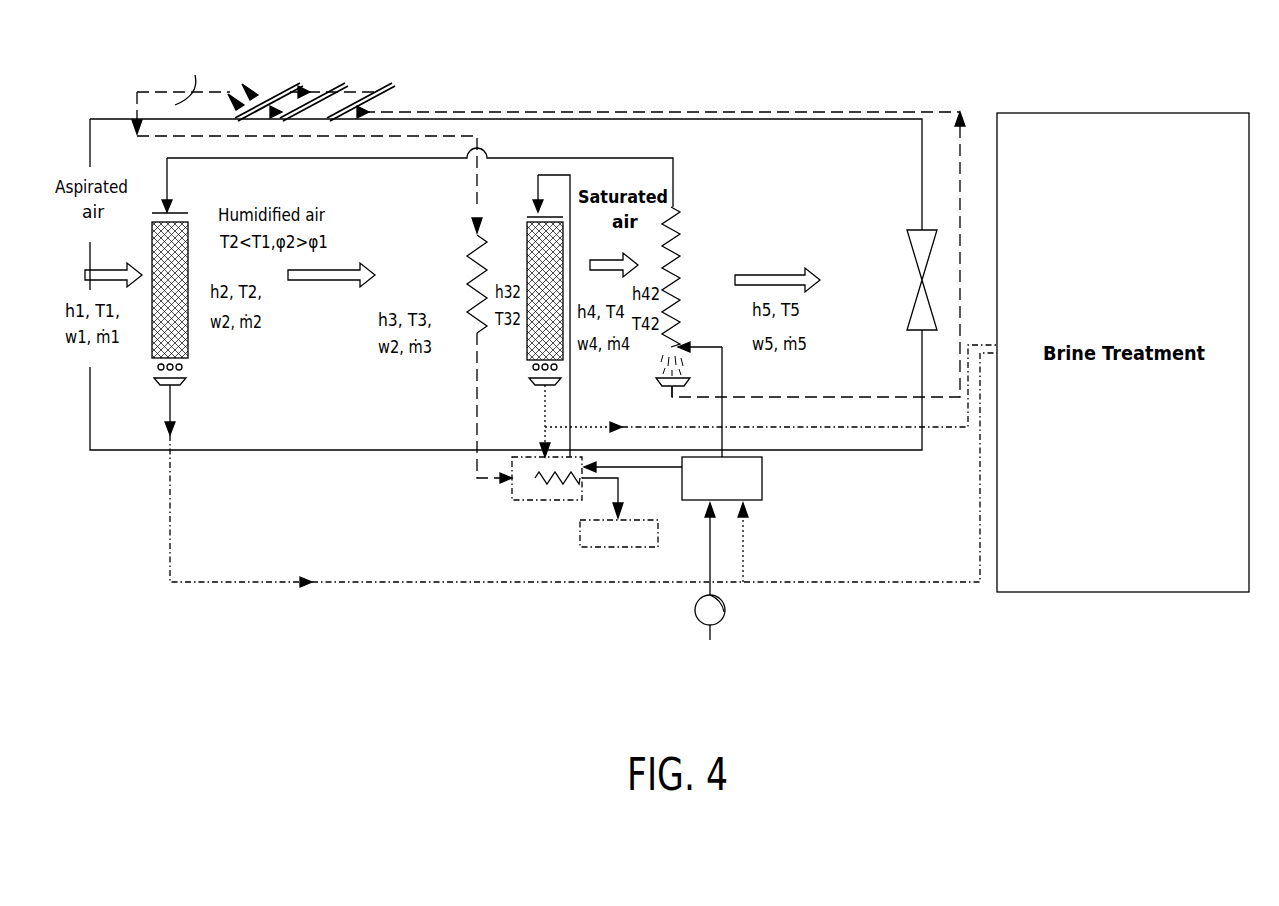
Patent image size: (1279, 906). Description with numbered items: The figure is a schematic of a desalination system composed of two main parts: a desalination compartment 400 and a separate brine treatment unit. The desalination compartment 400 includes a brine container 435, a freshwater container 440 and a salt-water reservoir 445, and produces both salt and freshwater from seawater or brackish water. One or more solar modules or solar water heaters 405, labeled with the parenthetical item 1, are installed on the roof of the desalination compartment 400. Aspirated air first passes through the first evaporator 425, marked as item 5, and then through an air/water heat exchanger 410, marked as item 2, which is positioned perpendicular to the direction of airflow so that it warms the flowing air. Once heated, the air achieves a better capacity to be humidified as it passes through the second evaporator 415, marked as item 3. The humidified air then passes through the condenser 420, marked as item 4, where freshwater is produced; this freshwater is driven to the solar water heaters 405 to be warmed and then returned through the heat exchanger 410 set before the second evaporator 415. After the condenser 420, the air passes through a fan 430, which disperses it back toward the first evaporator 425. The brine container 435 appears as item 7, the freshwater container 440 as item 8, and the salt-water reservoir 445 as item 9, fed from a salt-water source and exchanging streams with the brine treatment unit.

The desalination compartment 400 is at (612, 120).
The solar water heaters 405 is at (548, 217).
The air/water heat exchanger 410 is at (472, 357).
The second evaporator 415 is at (739, 312).
The condenser 420 is at (716, 320).
The first evaporator 425 is at (556, 383).
The fan 430 is at (913, 251).
The brine container 435 is at (546, 495).
The freshwater container 440 is at (573, 551).
The salt-water reservoir 445 is at (719, 564).
The solar modules 1 is at (330, 92).
The air heater 2 is at (452, 241).
The second humidifier 3 is at (557, 191).
The dehumidifier 4 is at (692, 206).
The first humidifier 5 is at (190, 189).
The brine heat exchanger 7 is at (494, 499).
The fresh water tank 8 is at (560, 556).
The salt-water mixing tank 9 is at (782, 482).